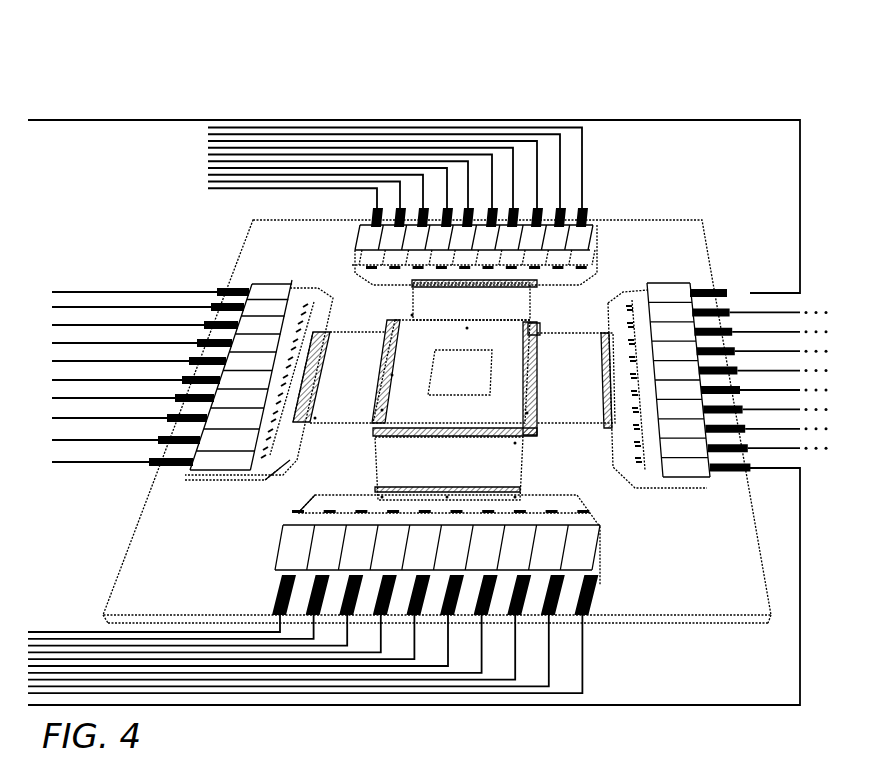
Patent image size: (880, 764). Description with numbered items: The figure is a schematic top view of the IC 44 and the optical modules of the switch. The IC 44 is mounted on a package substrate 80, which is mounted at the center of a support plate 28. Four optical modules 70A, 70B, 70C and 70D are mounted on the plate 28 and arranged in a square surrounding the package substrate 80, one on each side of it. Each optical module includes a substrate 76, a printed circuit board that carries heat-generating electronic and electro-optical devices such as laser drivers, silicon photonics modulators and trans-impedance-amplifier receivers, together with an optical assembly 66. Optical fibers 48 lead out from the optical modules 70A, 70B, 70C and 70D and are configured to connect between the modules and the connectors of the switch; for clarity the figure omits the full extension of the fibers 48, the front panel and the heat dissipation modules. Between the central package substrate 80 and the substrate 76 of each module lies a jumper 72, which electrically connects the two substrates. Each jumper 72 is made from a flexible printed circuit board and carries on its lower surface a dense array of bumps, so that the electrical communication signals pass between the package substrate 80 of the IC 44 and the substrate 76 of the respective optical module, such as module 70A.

The support plate 28 is at (417, 421).
The IC 44 is at (460, 372).
The optical fibers 48 is at (441, 406).
The optical assembly 66 is at (471, 380).
The optical module 70A is at (694, 480).
The optical module 70B is at (478, 582).
The optical module 70C is at (241, 424).
The optical module 70D is at (524, 149).
The jumper 72 is at (454, 390).
The substrate 76 is at (302, 493).
The package substrate 80 is at (544, 319).